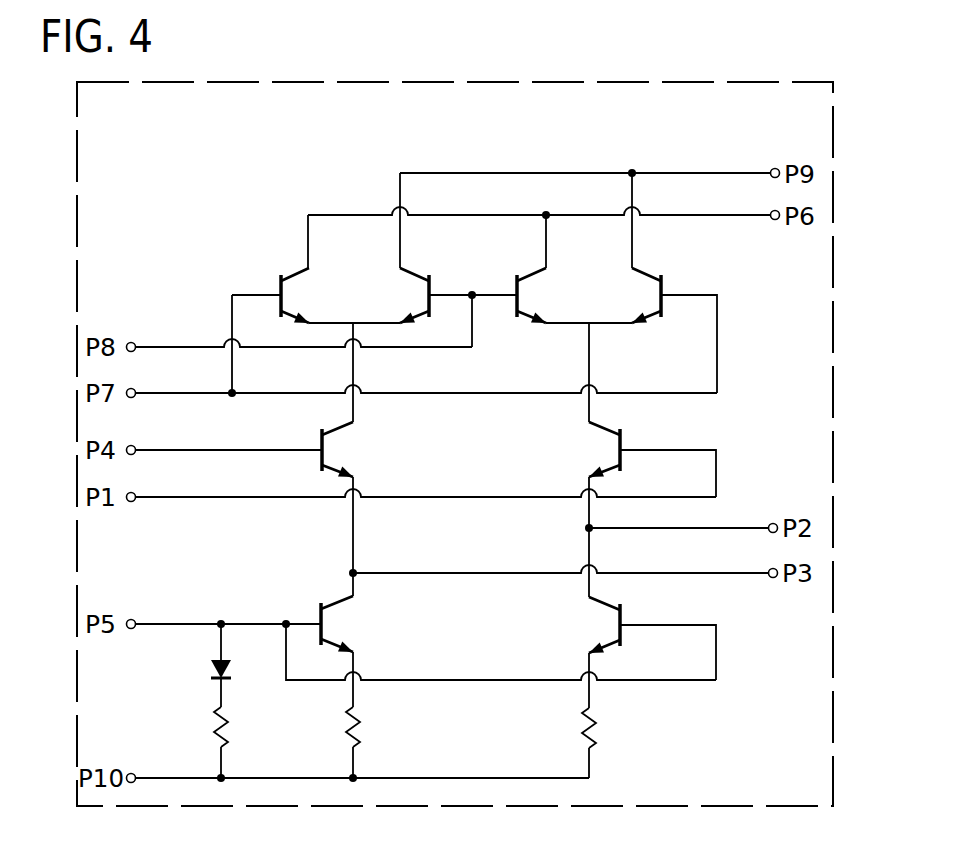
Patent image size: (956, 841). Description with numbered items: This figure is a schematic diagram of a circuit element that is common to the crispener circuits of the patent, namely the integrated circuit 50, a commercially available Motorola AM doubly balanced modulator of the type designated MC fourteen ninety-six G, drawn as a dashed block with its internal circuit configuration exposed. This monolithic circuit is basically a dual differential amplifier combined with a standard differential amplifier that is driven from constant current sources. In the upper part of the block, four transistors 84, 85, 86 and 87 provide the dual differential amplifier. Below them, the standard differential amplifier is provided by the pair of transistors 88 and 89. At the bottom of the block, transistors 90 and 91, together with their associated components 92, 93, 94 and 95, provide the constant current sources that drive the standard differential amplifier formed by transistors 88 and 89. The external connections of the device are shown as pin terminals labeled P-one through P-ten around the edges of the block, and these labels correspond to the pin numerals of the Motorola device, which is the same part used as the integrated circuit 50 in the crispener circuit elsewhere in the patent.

The integrated circuit 50 is at (700, 90).
The transistor 84 is at (296, 273).
The transistor 85 is at (427, 274).
The transistor 86 is at (527, 274).
The transistor 87 is at (660, 275).
The transistor 88 is at (329, 470).
The transistor 89 is at (614, 470).
The transistor 90 is at (333, 600).
The transistor 91 is at (621, 605).
The associated component 92 is at (360, 716).
The associated component 93 is at (596, 716).
The associated component 94 is at (212, 672).
The associated component 95 is at (229, 718).